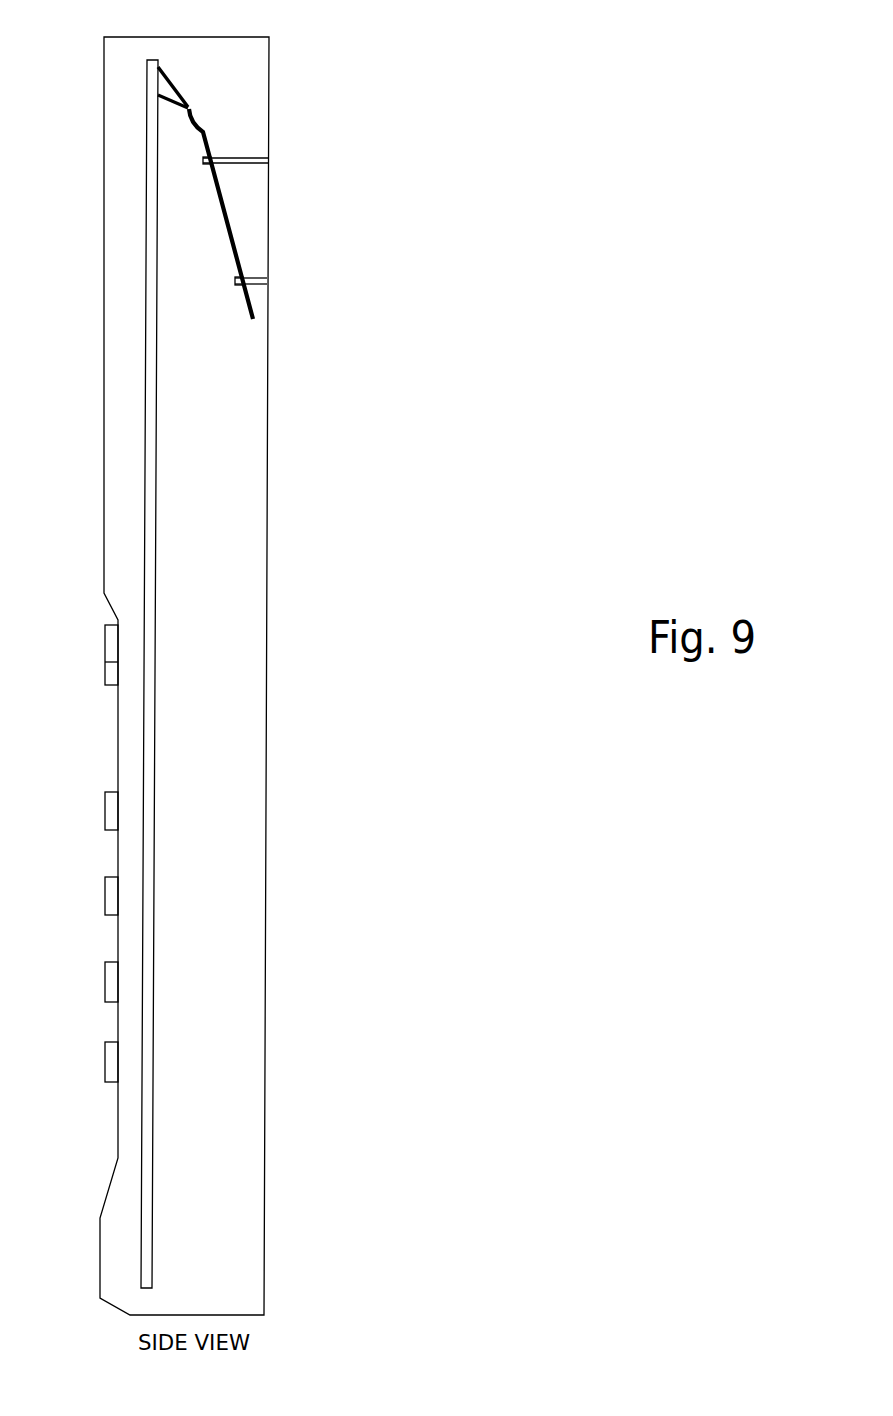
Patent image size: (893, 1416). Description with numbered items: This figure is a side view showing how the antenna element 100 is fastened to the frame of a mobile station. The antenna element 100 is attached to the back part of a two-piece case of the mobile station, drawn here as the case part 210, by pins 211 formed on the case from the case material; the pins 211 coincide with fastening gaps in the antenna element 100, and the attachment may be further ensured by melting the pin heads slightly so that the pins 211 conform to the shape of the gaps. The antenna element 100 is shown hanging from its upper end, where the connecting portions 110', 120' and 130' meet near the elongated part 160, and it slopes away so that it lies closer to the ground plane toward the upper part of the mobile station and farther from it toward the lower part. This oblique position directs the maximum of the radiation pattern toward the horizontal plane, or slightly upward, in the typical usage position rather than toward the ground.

The antenna element 100 is at (228, 218).
The support arm 110' is at (239, 53).
The hinge 120' is at (173, 101).
The link arm 130' is at (280, 84).
The mounting bar 160 is at (145, 367).
The display housing 210 is at (265, 793).
The pins 211 is at (257, 158).